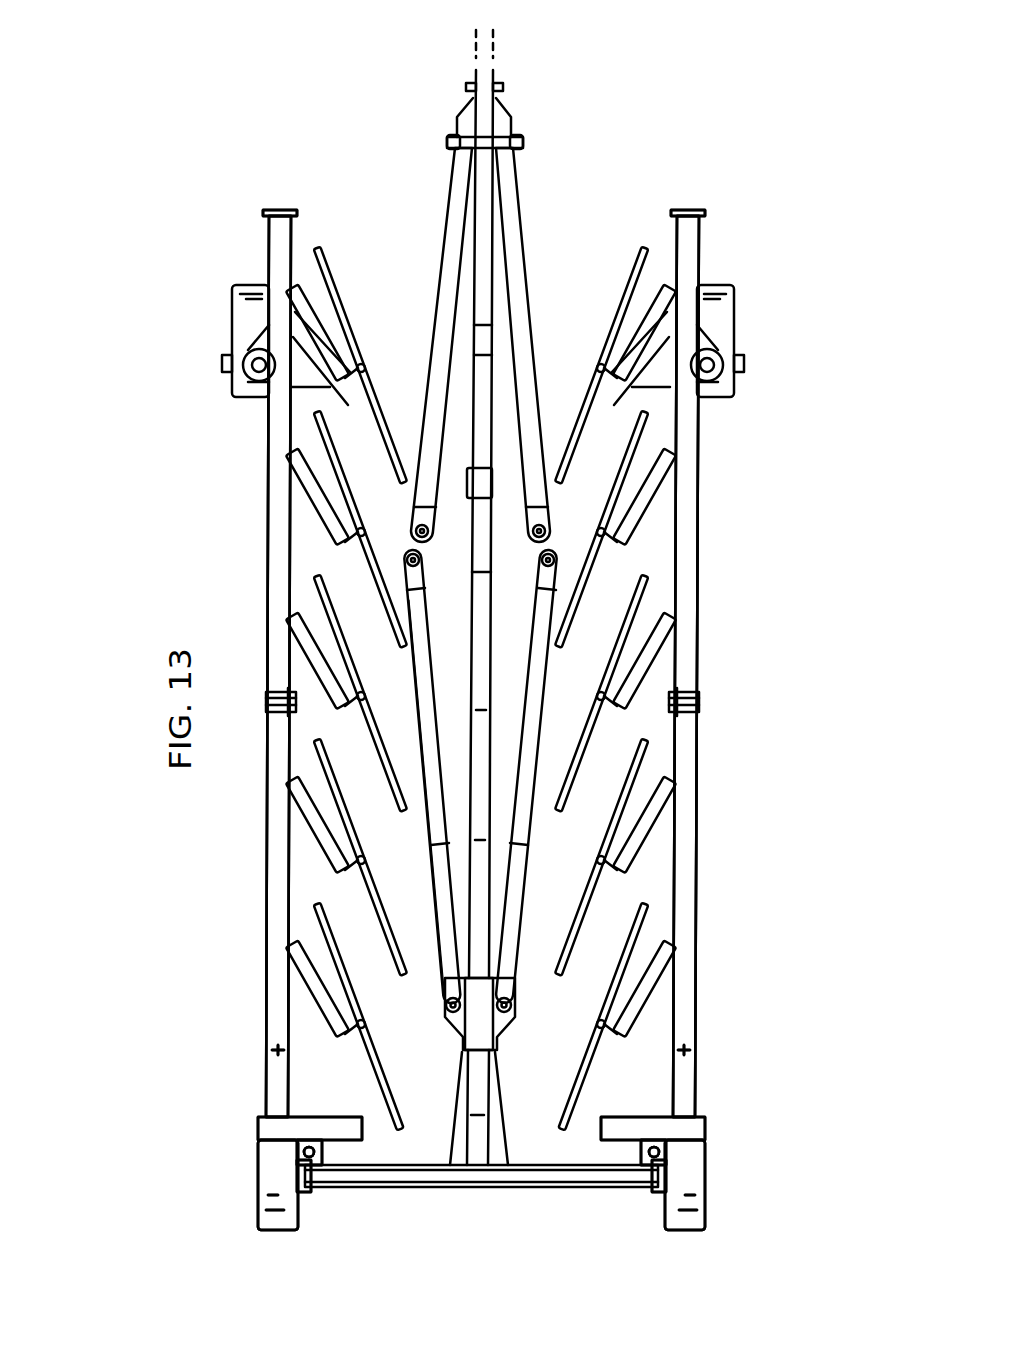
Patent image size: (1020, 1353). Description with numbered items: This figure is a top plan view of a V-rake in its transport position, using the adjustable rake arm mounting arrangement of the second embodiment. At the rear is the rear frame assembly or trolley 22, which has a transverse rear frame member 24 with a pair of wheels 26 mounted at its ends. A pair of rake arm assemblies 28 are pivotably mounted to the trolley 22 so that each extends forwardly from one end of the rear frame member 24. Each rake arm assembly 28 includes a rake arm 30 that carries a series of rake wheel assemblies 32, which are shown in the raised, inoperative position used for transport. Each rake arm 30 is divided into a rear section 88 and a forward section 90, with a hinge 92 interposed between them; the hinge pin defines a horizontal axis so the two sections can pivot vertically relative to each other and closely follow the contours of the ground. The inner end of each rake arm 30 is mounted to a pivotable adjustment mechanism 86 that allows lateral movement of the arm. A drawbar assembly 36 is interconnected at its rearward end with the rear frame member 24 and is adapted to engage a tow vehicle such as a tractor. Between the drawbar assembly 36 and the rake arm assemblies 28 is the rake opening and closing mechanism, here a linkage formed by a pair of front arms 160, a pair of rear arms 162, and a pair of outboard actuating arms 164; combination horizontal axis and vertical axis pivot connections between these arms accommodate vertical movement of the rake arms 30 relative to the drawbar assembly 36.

The rear frame assembly or trolley 22 is at (450, 1192).
The transverse rear frame member 24 is at (400, 1188).
The wheels 26 is at (258, 1172).
The rake arm assembly 28 is at (152, 811).
The rake arm 30 is at (262, 590).
The rake wheel assembly 32 is at (316, 940).
The drawbar assembly 36 is at (505, 368).
The pivotable adjustment mechanism 86 is at (256, 1113).
The rear section 88 is at (365, 893).
The forward section 90 is at (268, 528).
The hinge 92 is at (283, 714).
The front arms 160 is at (445, 275).
The rear arms 162 is at (437, 880).
The outboard actuating arms 164 is at (318, 402).